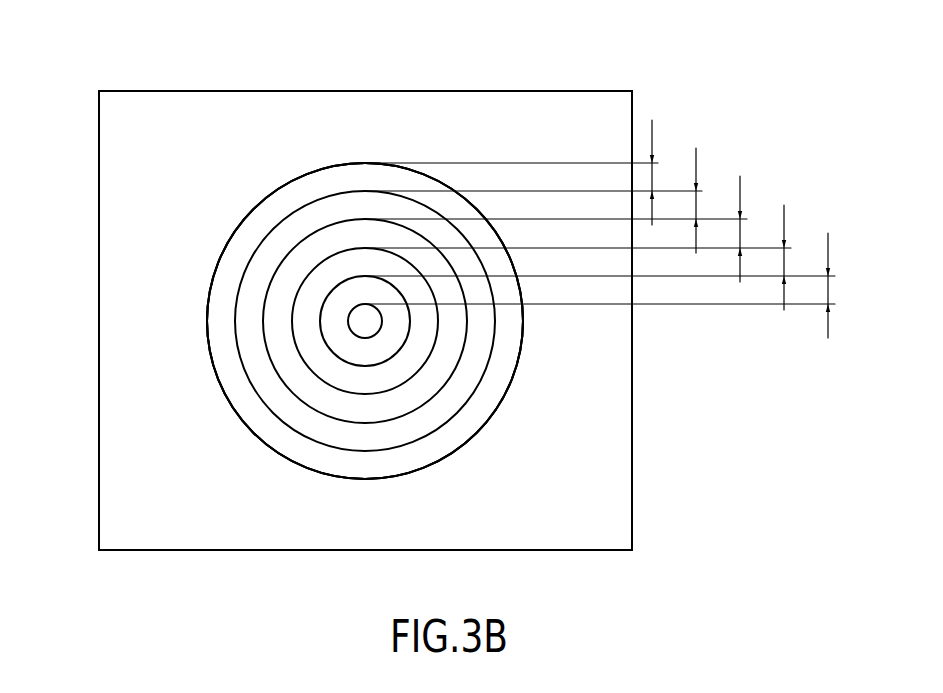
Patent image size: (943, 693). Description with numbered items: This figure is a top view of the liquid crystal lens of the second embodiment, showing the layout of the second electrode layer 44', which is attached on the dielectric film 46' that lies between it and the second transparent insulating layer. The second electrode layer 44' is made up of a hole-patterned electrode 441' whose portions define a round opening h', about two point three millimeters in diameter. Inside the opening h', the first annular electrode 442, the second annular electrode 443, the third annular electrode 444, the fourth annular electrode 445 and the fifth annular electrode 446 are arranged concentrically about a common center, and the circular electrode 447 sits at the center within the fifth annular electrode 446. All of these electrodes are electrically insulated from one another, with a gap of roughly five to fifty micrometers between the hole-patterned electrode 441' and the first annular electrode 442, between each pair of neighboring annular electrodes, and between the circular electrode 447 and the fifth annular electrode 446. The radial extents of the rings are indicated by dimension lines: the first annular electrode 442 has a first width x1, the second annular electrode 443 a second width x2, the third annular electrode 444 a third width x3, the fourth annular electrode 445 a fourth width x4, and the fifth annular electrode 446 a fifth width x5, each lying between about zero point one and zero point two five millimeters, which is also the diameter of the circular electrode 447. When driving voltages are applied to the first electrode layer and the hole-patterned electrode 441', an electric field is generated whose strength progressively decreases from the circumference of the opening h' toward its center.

The second electrode layer 44' is at (365, 286).
The hole-patterned electrode 441' is at (153, 77).
The opening h' is at (365, 250).
The first annular electrode 442 is at (262, 424).
The second annular electrode 443 is at (269, 386).
The third annular electrode 444 is at (280, 340).
The fourth annular electrode 445 is at (348, 264).
The fifth annular electrode 446 is at (357, 292).
The circular electrode 447 is at (364, 321).
The dielectric film 46' is at (455, 321).
The first width x1 is at (666, 172).
The second width x2 is at (710, 200).
The third width x3 is at (754, 229).
The fourth width x4 is at (798, 257).
The fifth width x5 is at (842, 285).